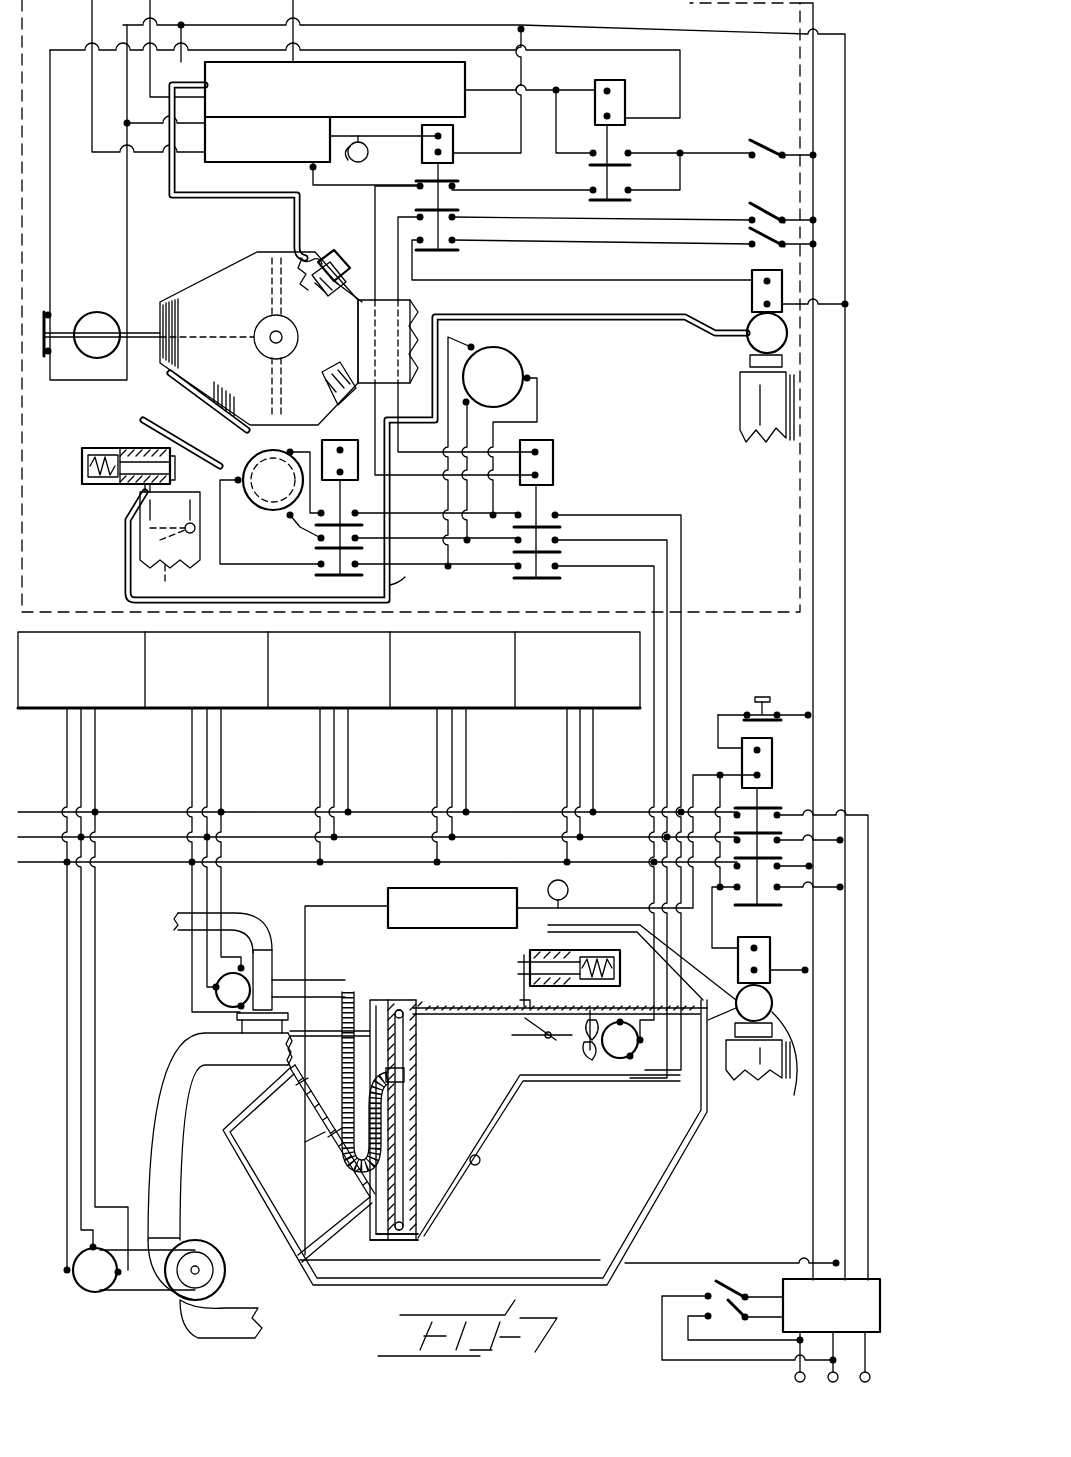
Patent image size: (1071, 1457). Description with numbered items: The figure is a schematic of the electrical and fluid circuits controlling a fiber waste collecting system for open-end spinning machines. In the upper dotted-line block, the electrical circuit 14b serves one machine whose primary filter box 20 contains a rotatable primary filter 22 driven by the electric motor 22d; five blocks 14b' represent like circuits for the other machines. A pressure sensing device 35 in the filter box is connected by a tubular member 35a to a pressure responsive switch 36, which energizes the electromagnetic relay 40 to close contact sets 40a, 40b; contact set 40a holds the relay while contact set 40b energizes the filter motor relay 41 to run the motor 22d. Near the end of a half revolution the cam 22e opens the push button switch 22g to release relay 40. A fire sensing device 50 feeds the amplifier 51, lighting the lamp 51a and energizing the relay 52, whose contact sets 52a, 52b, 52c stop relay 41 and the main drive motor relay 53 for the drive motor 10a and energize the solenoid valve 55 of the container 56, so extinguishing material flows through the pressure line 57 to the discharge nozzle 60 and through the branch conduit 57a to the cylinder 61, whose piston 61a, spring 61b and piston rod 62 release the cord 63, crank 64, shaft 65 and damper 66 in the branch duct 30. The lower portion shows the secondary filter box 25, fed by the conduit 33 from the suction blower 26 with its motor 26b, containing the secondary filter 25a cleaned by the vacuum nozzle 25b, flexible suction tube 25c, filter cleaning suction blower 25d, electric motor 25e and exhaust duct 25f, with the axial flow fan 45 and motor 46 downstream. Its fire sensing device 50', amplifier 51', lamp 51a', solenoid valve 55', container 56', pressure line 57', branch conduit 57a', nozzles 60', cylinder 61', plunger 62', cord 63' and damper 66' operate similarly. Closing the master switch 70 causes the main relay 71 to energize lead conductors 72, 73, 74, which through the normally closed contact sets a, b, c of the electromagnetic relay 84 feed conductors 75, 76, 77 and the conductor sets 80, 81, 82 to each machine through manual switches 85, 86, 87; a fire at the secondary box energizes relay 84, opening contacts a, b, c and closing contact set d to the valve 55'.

The electric motor 10a is at (522, 348).
The electrical circuit 14b is at (411, 377).
The electric circuits 14b' is at (329, 684).
The primary filter box 20 is at (225, 262).
The primary filter 22 is at (270, 288).
The electric motor 22d is at (276, 514).
The cam 22e is at (80, 318).
The push button switch 22g is at (42, 358).
The secondary filter box 25 is at (440, 1238).
The secondary filter 25a is at (414, 1106).
The vacuum nozzle 25b is at (414, 1073).
The flexible suction tube 25c is at (350, 1004).
The filter cleaning suction blower 25d is at (272, 965).
The electric motor 25e is at (208, 990).
The exhaust duct 25f is at (178, 913).
The suction blower 26 is at (202, 1235).
The suction blower motor 26b is at (96, 1282).
The branch duct 30 is at (157, 400).
The conduit 33 is at (152, 1152).
The pressure sensing device 35 is at (284, 252).
The tubular member 35a is at (165, 187).
The pressure responsive switch 36 is at (388, 58).
The electromagnetic relay 40 is at (608, 105).
The contact set 40a is at (633, 162).
The contact set 40b is at (671, 190).
The filter motor relay 41 is at (343, 507).
The axial flow fan 45 is at (604, 1040).
The electric motor 46 is at (624, 1058).
The fire sensing device 50 is at (324, 296).
The fire sensing device 50' is at (319, 1099).
The amplifier 51 is at (267, 155).
The amplifier 51' is at (411, 1063).
The lamp 51a is at (382, 150).
The lamp 51a' is at (471, 1020).
The electromagnetic relay 52 is at (458, 143).
The contact set 52a is at (460, 184).
The contact set 52b is at (460, 216).
The contact set 52c is at (454, 258).
The main drive motor relay 53 is at (563, 461).
The solenoid valve 55 is at (777, 311).
The solenoid valve 55' is at (760, 996).
The container 56 is at (742, 398).
The container 56' is at (758, 1076).
The pressure line 57 is at (437, 443).
The pressure line 57' is at (531, 1142).
The branch conduit 57a is at (424, 588).
The branch conduit 57a' is at (610, 972).
The discharge nozzle 60 is at (329, 367).
The fire extinguisher nozzles 60' is at (332, 1113).
The cylinder 61 is at (103, 466).
The cylinder 61' is at (591, 968).
The piston 61a is at (134, 428).
The spring 61b is at (90, 444).
The piston rod 62 is at (181, 440).
The plunger 62' is at (496, 979).
The cord 63 is at (120, 491).
The cord 63' is at (496, 992).
The crank 64 is at (142, 500).
The shaft 65 is at (196, 528).
The damper 66 is at (136, 556).
The damper 66' is at (517, 1035).
The master switch 70 is at (712, 1288).
The main relay 71 is at (892, 1262).
The lead conductor 72 is at (804, 1176).
The lead conductor 73 is at (834, 1146).
The lead conductor 74 is at (866, 1124).
The conductor 75 is at (518, 848).
The conductor 76 is at (518, 822).
The conductor 77 is at (518, 795).
The conductor 80 is at (648, 654).
The conductor 81 is at (648, 677).
The conductor 82 is at (648, 700).
The electromagnetic relay 84 is at (742, 760).
The manually operable switch 85 is at (765, 108).
The manually operable switch 86 is at (748, 204).
The manually operable switch 87 is at (751, 248).
The contact set a is at (801, 1033).
The contact set b is at (789, 829).
The contact set c is at (773, 854).
The contact set d is at (789, 899).